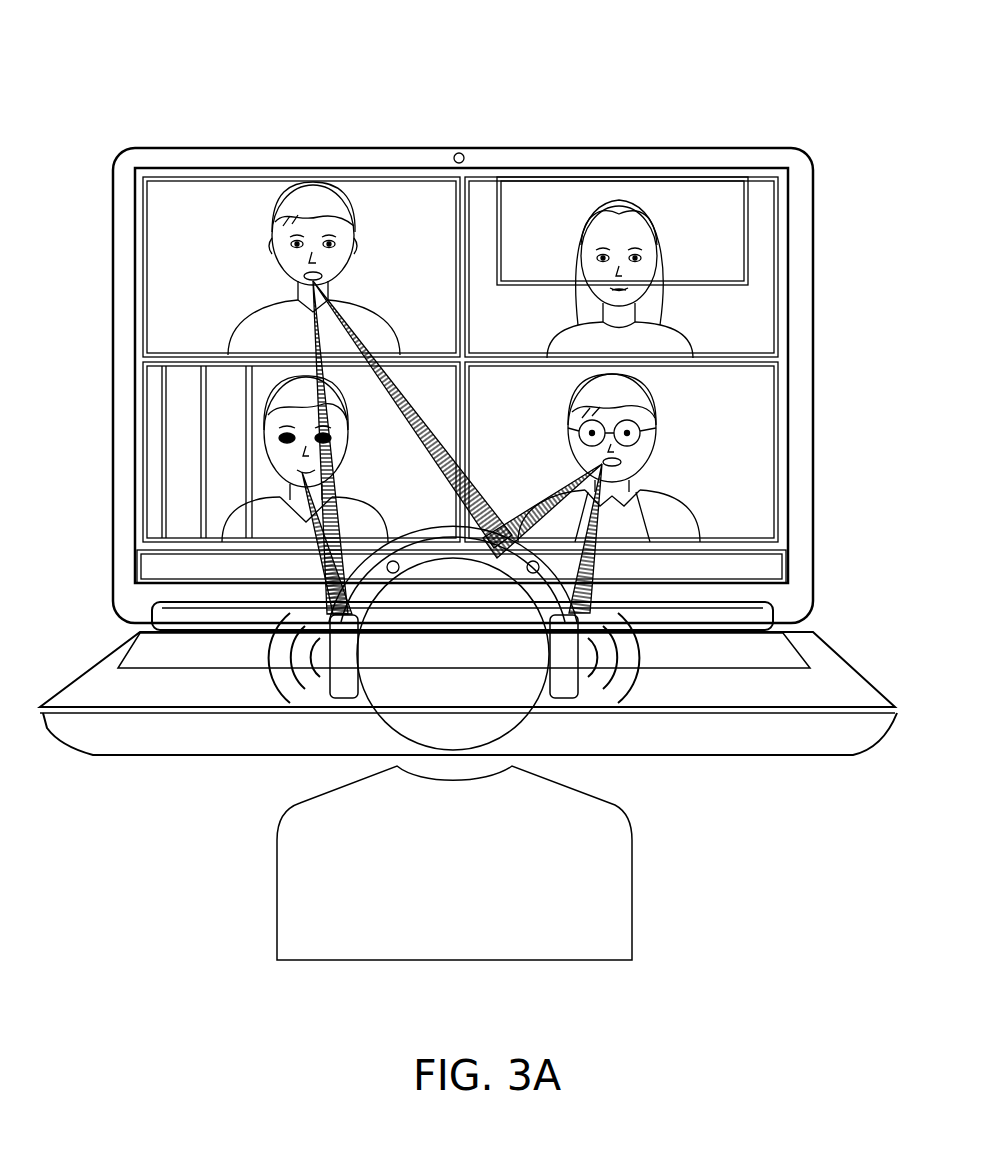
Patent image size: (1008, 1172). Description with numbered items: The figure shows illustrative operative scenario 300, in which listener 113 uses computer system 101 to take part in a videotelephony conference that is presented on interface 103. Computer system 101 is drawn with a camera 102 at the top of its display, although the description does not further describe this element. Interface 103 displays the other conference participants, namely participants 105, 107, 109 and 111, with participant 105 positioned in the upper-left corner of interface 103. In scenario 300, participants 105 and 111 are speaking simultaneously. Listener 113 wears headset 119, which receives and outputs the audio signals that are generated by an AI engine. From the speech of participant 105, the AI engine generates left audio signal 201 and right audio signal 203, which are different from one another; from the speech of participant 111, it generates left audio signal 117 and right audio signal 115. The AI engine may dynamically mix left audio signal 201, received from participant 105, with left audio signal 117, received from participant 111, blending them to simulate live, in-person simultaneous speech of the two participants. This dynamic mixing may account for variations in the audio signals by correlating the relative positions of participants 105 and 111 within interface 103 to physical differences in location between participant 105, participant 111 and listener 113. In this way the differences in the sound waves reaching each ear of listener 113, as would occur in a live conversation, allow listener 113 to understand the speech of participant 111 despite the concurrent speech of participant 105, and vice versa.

The operative scenario 300 is at (114, 42).
The computer system 101 is at (280, 148).
The camera 102 is at (461, 152).
The interface 103 is at (588, 172).
The participant 105 is at (142, 270).
The participant 107 is at (779, 267).
The participant 109 is at (142, 453).
The participant 111 is at (779, 453).
The left audio signal 201 is at (323, 570).
The right audio signal 203 is at (352, 312).
The left audio signal 117 is at (518, 513).
The right audio signal 115 is at (586, 572).
The headset 119 is at (325, 693).
The listener 113 is at (632, 840).